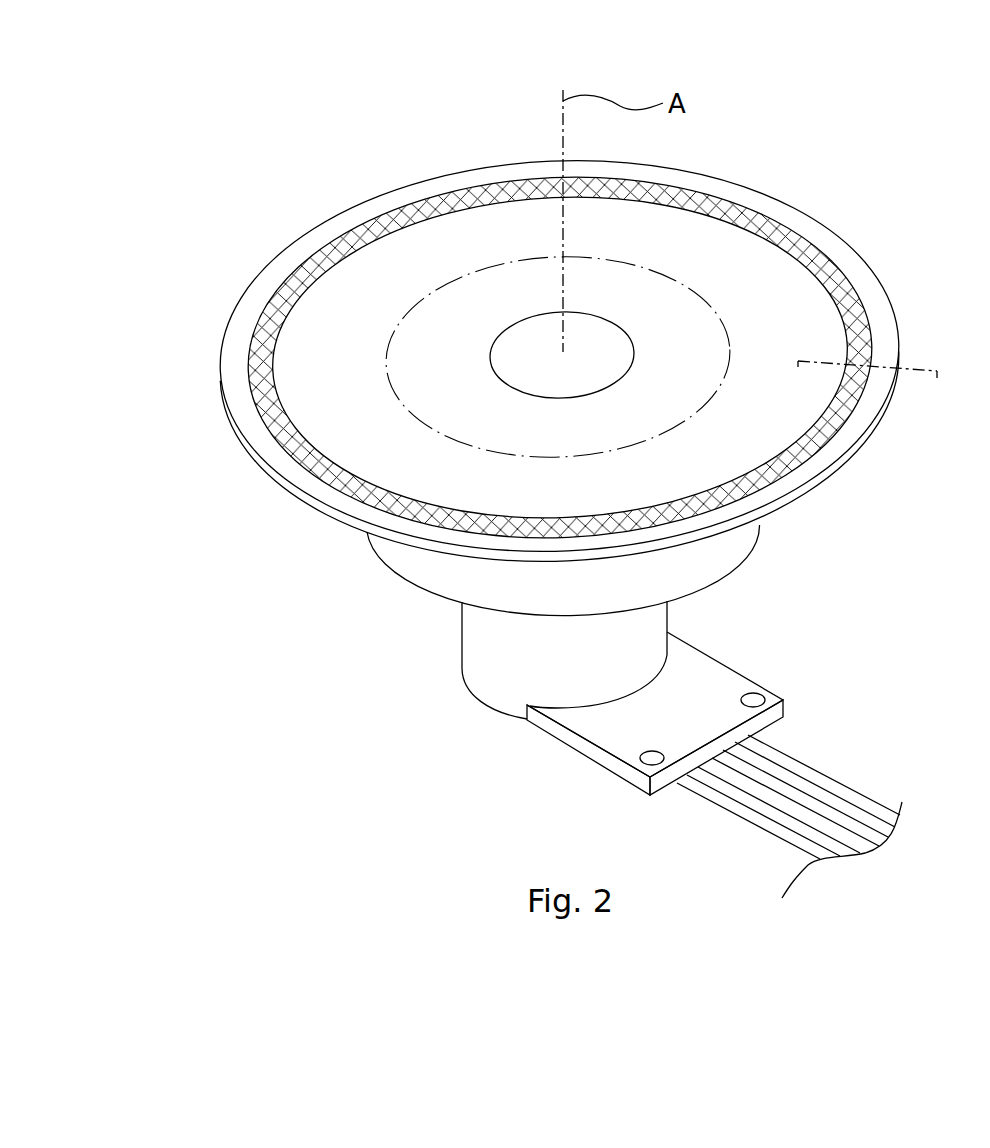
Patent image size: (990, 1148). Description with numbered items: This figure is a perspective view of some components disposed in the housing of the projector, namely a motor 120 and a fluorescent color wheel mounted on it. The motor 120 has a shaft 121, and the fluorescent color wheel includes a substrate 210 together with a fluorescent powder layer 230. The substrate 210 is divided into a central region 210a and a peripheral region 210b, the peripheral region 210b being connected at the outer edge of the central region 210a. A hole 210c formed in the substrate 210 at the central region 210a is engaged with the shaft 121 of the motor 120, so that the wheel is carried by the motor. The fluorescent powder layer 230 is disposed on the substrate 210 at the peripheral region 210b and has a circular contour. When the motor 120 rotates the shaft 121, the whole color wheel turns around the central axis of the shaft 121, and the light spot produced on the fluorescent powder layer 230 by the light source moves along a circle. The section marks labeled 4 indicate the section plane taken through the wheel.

The motor 120 is at (503, 642).
The shaft 121 is at (597, 343).
The substrate 210 is at (220, 375).
The central region 210a is at (705, 355).
The peripheral region 210b is at (741, 268).
The hole 210c is at (686, 355).
The fluorescent powder layer 230 is at (256, 332).
The section line 4- 4 is at (796, 376).